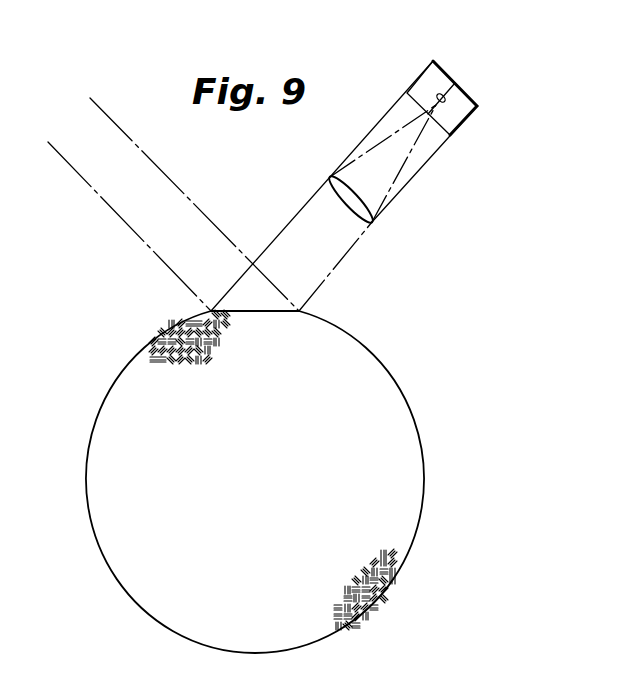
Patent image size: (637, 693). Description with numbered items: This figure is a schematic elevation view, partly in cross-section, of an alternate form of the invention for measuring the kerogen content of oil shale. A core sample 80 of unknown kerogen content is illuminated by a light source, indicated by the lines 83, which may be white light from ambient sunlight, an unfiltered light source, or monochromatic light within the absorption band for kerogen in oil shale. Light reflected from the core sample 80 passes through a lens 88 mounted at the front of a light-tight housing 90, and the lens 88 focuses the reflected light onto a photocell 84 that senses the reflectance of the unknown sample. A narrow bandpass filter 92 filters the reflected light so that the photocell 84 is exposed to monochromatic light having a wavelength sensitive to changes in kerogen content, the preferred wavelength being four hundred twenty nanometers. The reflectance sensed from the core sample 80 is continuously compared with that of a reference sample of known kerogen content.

The core sample 80 is at (400, 418).
The lines indicating light source 83 is at (138, 147).
The photocell 84 is at (453, 85).
The lens 88 is at (372, 222).
The light-tight housing 90 is at (412, 183).
The narrow bandpass filter 92 is at (442, 133).